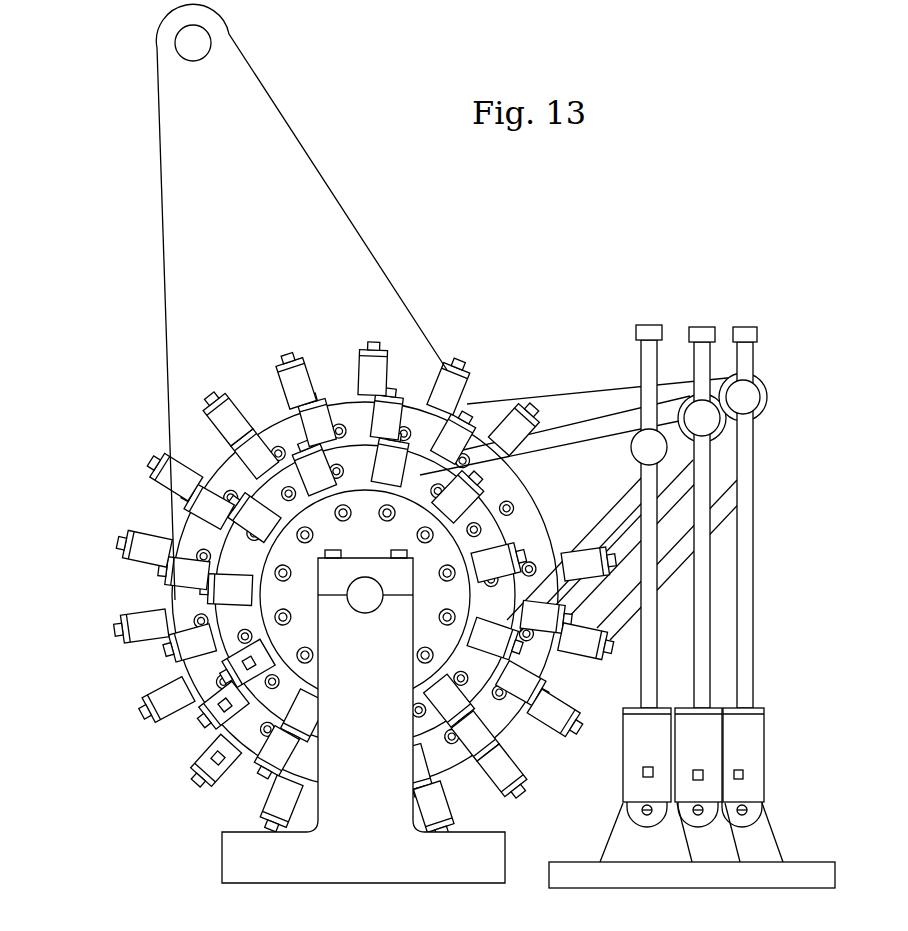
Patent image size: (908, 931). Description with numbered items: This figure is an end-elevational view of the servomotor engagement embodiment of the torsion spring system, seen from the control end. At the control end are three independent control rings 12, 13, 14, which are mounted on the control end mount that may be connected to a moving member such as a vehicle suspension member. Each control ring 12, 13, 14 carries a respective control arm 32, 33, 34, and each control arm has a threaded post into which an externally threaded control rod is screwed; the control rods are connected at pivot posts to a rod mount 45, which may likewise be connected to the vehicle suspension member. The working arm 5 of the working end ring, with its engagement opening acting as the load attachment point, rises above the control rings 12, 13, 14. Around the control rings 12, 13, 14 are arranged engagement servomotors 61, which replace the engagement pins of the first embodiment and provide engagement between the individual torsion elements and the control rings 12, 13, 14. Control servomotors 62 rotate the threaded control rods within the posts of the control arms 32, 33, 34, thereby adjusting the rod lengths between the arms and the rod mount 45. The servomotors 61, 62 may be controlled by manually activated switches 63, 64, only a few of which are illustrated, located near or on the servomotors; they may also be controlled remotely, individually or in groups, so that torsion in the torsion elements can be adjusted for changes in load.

The working arm 5 is at (353, 262).
The control ring 12 is at (443, 550).
The control ring 13 is at (240, 553).
The control ring 14 is at (282, 433).
The control arm 32 is at (537, 463).
The control arm 33 is at (593, 433).
The control arm 34 is at (717, 447).
The rod mount 45 is at (797, 875).
The engagement servomotor 61 is at (440, 392).
The control servomotor 62 is at (697, 740).
The switch 63 is at (743, 777).
The switch 64 is at (225, 753).